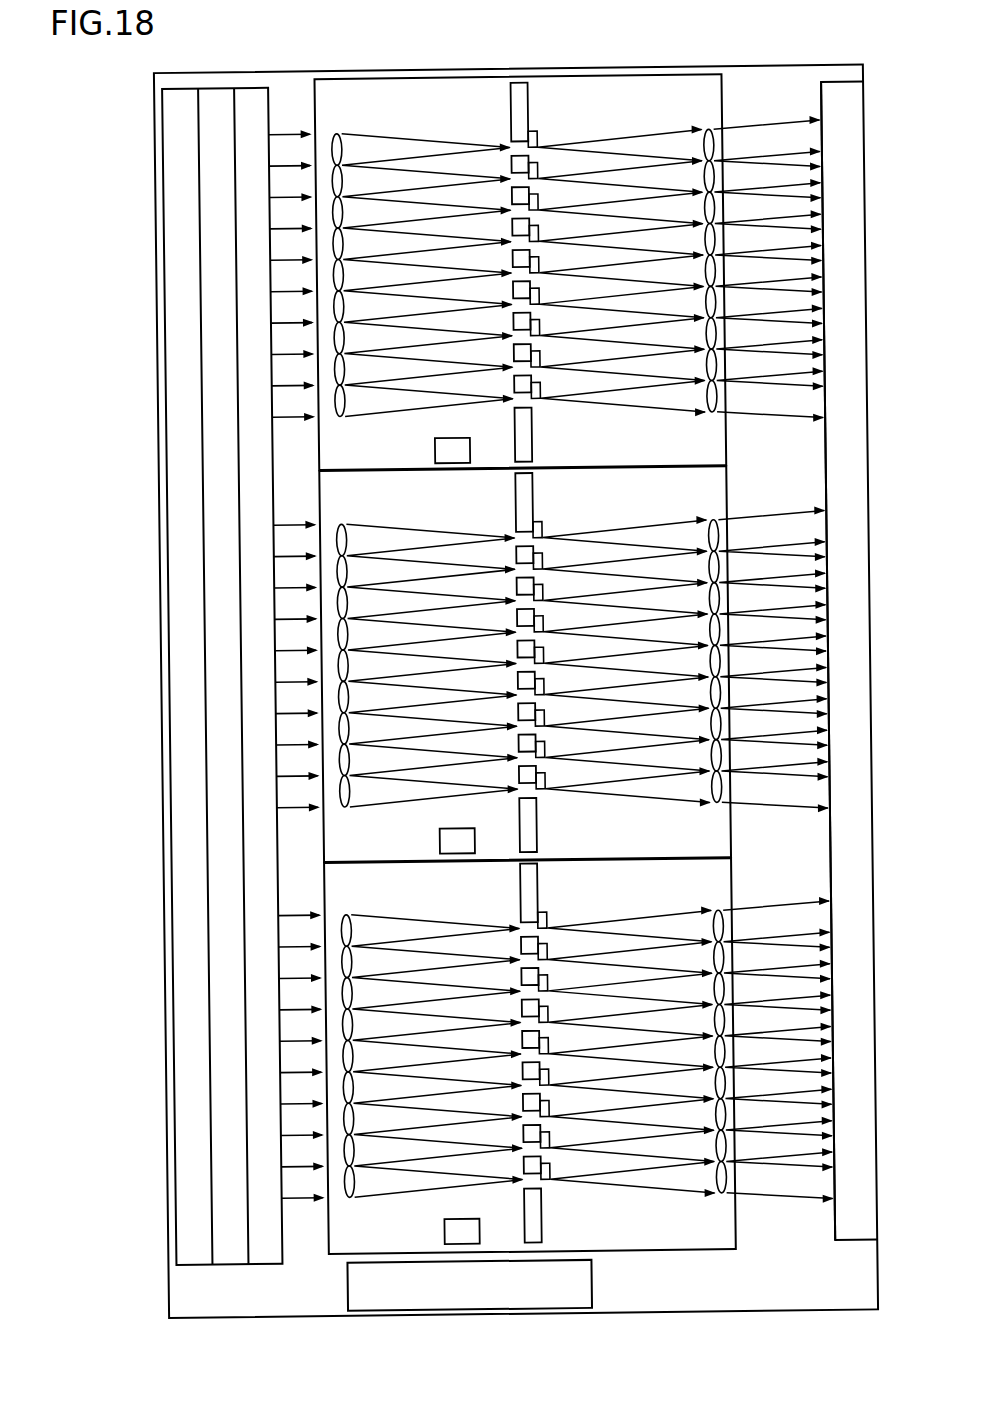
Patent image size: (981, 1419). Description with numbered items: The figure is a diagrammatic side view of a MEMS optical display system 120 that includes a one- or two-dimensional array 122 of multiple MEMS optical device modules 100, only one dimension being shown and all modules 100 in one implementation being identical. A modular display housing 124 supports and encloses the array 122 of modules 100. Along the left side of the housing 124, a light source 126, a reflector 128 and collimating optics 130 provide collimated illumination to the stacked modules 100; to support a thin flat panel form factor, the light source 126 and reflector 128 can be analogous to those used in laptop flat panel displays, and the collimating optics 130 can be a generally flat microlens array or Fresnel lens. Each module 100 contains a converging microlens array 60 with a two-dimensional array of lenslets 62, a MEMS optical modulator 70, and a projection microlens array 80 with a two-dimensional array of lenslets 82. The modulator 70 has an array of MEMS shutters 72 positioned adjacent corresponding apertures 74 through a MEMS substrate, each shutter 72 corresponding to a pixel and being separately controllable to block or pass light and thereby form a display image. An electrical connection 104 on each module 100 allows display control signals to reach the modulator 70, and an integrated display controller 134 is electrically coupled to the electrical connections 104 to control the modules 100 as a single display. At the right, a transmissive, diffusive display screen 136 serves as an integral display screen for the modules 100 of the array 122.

The converging microlens array 60 is at (394, 836).
The lenslets 62 is at (367, 650).
The MEMS optical modulator 70 is at (501, 629).
The MEMS shutters 72 is at (556, 633).
The apertures 74 is at (545, 821).
The projection microlens array 80 is at (638, 498).
The lenslets 82 is at (696, 682).
The MEMS optical device module 100 is at (527, 836).
The electrical connection 104 is at (477, 831).
The MEMS optical display system 120 is at (133, 295).
The array 122 is at (739, 106).
The modular display housing 124 is at (554, 73).
The light source 126 is at (177, 1196).
The reflector 128 is at (213, 1250).
The collimating optics 130 is at (262, 1246).
The integrated display controller 134 is at (576, 1275).
The display screen 136 is at (828, 1232).